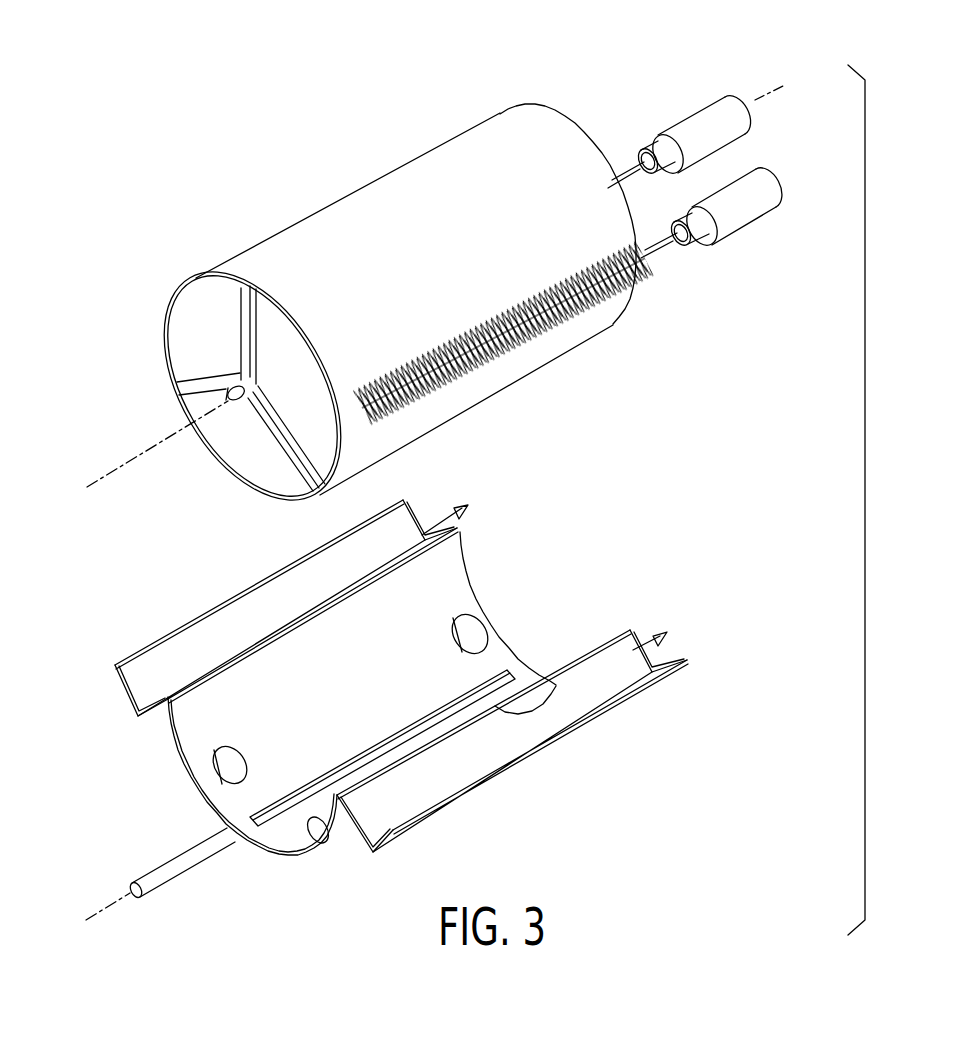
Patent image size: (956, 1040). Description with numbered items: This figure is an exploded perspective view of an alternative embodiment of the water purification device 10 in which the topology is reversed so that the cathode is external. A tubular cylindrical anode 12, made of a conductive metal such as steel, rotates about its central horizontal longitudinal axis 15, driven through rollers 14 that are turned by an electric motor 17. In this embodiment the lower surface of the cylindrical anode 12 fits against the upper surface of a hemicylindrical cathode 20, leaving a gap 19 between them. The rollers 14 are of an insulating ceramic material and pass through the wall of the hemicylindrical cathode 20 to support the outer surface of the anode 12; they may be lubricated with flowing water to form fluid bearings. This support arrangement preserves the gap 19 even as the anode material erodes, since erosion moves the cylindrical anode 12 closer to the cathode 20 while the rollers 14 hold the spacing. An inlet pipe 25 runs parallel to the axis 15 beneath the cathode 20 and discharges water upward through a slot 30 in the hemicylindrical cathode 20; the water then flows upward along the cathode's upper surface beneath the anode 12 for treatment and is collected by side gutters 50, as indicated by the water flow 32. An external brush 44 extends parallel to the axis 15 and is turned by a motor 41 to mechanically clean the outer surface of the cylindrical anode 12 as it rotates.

The water purification device 10 is at (788, 137).
The cylindrical anode 12 is at (312, 243).
The rollers 14 is at (218, 768).
The central horizontal longitudinal axis 15 is at (768, 90).
The electric motor 17 is at (703, 128).
The gap 19 is at (578, 549).
The hemicylindrical cathode 20 is at (452, 568).
The inlet pipe 25 is at (165, 872).
The slot 30 is at (511, 643).
The water flow 32 is at (620, 658).
The motor 41 is at (733, 212).
The external brush 44 is at (630, 297).
The side gutters 50 is at (228, 598).